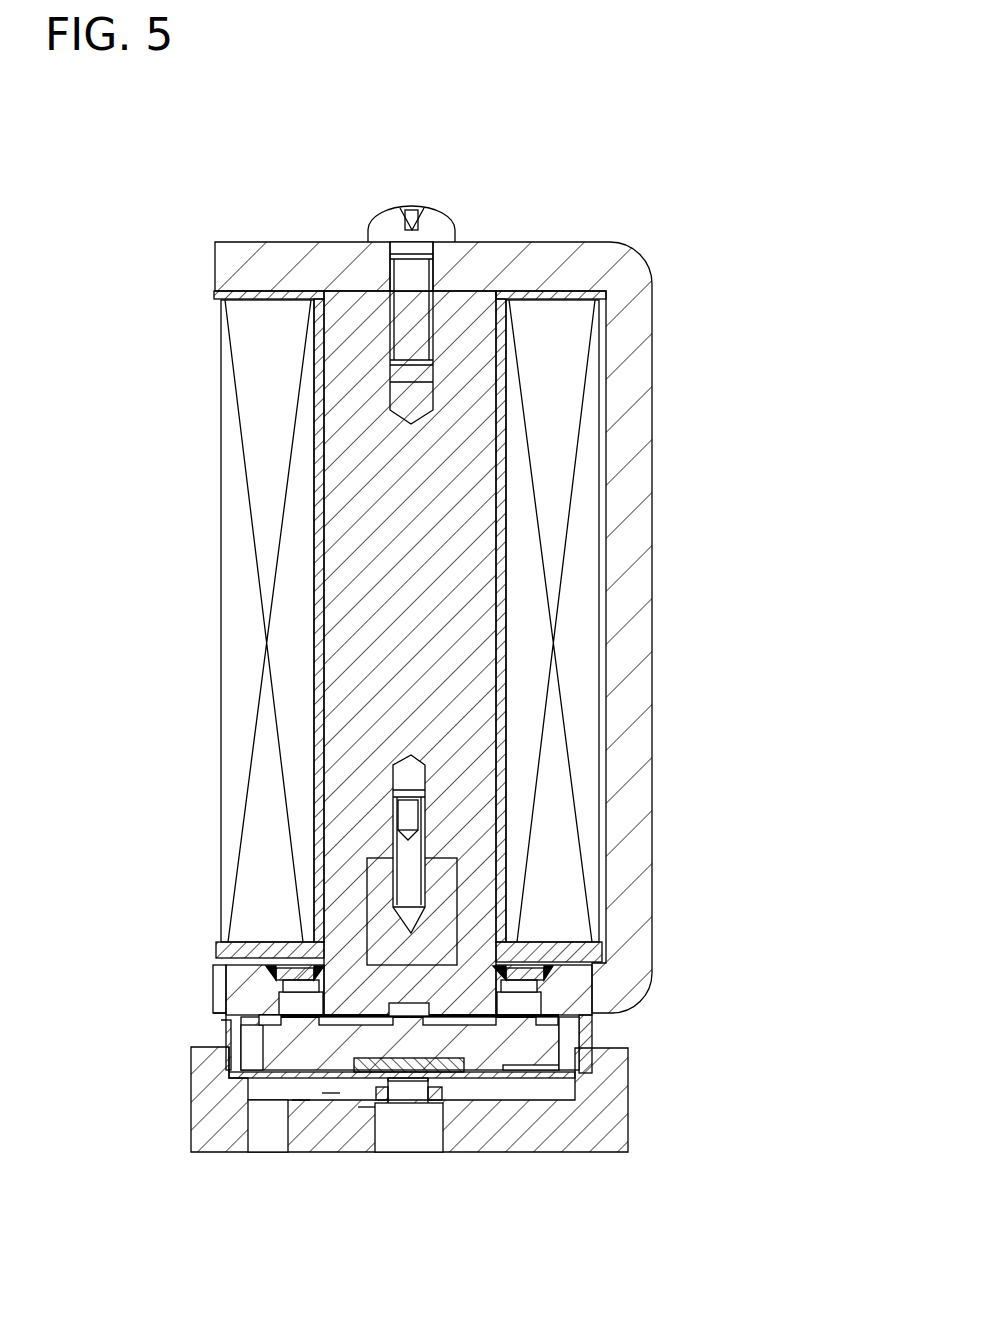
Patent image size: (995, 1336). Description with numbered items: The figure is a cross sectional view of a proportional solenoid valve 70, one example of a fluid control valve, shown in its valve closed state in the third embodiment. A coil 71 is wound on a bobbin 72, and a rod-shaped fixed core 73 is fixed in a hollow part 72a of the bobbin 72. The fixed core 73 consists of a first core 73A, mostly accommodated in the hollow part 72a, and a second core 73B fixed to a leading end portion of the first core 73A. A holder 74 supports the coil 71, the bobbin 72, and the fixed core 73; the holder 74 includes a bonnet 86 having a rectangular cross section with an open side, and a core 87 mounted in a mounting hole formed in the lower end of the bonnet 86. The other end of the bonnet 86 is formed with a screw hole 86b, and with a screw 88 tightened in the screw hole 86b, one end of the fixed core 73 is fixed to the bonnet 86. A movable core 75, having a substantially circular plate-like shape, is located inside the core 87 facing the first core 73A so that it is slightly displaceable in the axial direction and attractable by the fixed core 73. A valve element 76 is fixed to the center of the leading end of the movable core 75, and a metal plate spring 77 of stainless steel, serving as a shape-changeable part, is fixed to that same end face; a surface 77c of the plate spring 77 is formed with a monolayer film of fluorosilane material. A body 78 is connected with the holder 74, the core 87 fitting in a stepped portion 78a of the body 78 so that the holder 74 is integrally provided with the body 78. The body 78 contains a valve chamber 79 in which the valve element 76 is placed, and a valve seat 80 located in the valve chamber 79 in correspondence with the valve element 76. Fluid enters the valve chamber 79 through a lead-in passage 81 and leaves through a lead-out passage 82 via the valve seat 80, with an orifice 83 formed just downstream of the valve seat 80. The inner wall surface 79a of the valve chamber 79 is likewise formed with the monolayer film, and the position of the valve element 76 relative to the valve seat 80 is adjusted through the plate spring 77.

The proportional solenoid valve 70 is at (647, 212).
The coil 71 is at (596, 398).
The bobbin 72 is at (510, 512).
The hollow part 72a is at (487, 310).
The fixed core 73 is at (103, 872).
The first core 73A is at (324, 857).
The second core 73B is at (300, 1000).
The holder 74 is at (718, 875).
The movable core 75 is at (580, 1062).
The valve element 76 is at (470, 1100).
The plate spring 77 is at (580, 1076).
The surface of the plate spring 77c is at (555, 1078).
The body 78 is at (191, 1110).
The stepped portion 78a is at (233, 1072).
The valve chamber 79 is at (330, 1093).
The inner wall surface of the valve chamber 79a is at (309, 1088).
The valve seat 80 is at (365, 1107).
The lead-in passage 81 is at (262, 1135).
The lead-out passage 82 is at (425, 1095).
The orifice 83 is at (415, 1130).
The bonnet 86 is at (652, 886).
The screw hole 86b is at (418, 265).
The core 87 is at (593, 1022).
The screw 88 is at (382, 228).